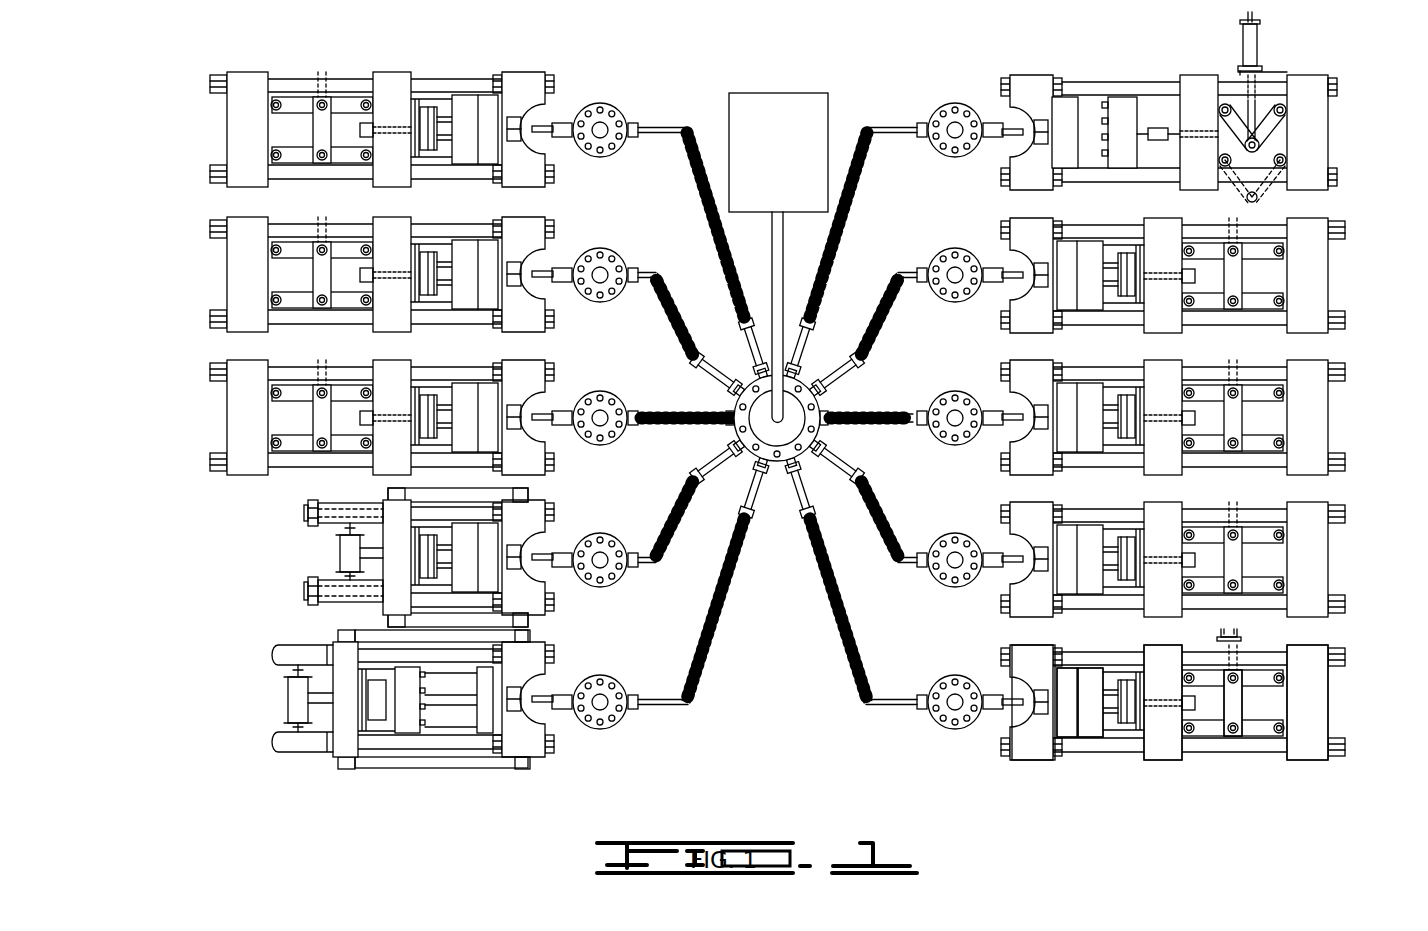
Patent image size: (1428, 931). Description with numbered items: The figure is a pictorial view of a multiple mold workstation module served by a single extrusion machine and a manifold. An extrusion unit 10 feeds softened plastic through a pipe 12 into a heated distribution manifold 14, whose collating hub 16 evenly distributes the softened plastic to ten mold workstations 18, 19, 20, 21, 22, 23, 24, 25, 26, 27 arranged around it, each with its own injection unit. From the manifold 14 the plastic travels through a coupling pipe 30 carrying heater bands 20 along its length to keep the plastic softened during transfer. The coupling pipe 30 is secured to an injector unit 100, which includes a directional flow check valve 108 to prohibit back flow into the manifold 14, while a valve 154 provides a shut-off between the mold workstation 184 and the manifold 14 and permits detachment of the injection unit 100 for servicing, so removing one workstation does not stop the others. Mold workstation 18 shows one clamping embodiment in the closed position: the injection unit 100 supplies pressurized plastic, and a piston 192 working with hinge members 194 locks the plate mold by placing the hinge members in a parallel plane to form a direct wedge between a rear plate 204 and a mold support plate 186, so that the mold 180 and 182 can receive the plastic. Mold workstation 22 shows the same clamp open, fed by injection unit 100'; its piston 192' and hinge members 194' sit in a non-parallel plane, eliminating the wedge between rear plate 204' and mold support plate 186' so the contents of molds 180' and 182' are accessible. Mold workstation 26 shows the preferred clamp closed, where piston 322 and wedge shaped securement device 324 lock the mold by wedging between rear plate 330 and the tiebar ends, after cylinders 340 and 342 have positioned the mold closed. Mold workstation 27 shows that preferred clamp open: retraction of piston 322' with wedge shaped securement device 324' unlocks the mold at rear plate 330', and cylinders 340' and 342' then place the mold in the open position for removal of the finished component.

The extrusion unit 10 is at (762, 93).
The pipe 12 is at (785, 238).
The heated distribution manifold 14 is at (795, 430).
The collating hub 16 is at (778, 435).
The mold workstation 18 is at (1176, 719).
The mold workstation 19 is at (1340, 560).
The heater bands 20 is at (1340, 415).
The mold workstation 21 is at (1340, 270).
The mold workstation 22 is at (1205, 107).
The mold workstation 23 is at (228, 120).
The mold workstation 24 is at (228, 270).
The mold workstation 25 is at (228, 412).
The mold workstation 26 is at (415, 551).
The mold workstation 27 is at (402, 721).
The coupling pipe 30 is at (868, 702).
The injector unit 100 is at (920, 730).
The injection unit 100' is at (924, 104).
The directional flow check valve 108 is at (922, 710).
The valve 154 is at (990, 690).
The mold 180 is at (1033, 744).
The mold 180' is at (1030, 94).
The mold 182 is at (1120, 740).
The mold 182' is at (1115, 98).
The mold workstation 184 is at (1025, 762).
The mold support plate 186 is at (1197, 727).
The mold support plate 186' is at (1183, 103).
The piston 192 is at (1316, 630).
The piston 192' is at (1293, 43).
The hinge members 194 is at (1278, 733).
The hinge members 194' is at (1323, 139).
The rear plate 204 is at (1354, 702).
The rear plate 204' is at (1355, 117).
The piston 322 is at (319, 551).
The piston 322' is at (266, 698).
The wedge shaped securement device 324 is at (302, 602).
The wedge shaped securement device 324' is at (252, 745).
The rear plate 330 is at (308, 504).
The rear plate 330' is at (380, 727).
The cylinder 340 is at (510, 488).
The cylinder 340' is at (485, 644).
The cylinder 342 is at (515, 613).
The cylinder 342' is at (475, 780).